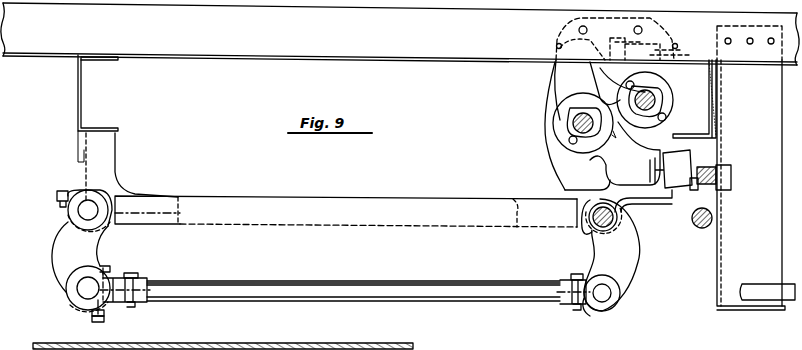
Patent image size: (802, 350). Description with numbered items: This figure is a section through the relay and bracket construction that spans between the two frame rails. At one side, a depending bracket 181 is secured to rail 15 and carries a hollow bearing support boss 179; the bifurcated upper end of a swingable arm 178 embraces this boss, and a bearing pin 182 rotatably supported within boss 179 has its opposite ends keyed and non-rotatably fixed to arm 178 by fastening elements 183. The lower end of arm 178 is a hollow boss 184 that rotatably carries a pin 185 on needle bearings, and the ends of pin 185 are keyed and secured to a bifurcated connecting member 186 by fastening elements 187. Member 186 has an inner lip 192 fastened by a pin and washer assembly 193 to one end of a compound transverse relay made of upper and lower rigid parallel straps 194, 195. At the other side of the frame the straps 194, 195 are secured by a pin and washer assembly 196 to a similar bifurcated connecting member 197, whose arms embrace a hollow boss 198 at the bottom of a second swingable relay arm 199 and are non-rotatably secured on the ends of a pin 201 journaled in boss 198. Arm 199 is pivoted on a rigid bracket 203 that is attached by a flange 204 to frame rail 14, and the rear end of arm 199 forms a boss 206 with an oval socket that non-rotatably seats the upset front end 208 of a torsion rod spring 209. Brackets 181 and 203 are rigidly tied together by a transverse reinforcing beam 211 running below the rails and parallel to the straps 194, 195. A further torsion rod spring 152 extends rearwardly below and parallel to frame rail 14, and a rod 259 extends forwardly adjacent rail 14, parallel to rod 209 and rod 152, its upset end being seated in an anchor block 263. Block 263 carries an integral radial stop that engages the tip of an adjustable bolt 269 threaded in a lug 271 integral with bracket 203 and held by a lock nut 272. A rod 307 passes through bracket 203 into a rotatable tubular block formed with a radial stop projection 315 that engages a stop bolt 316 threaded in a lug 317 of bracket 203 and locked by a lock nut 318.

The frame rail 14 is at (712, 119).
The rail 15 is at (83, 88).
The torsion rod spring 152 is at (702, 229).
The arm 178 is at (55, 262).
The hollow bearing support boss 179 is at (100, 230).
The depending bracket 181 is at (116, 146).
The bearing pin 182 is at (76, 210).
The fastening elements 183 is at (62, 191).
The hollow boss 184 is at (78, 309).
The pin 185 is at (76, 290).
The bifurcated connecting member 186 is at (114, 277).
The fastening elements 187 is at (100, 318).
The inner lip 192 is at (138, 284).
The pin and washer assembly 193 is at (131, 273).
The upper strap 194 is at (237, 282).
The lower strap 195 is at (262, 296).
The pin and washer assembly 196 is at (574, 278).
The bifurcated connecting member 197 is at (580, 306).
The hollow boss 198 is at (606, 312).
The second swingable relay arm 199 is at (640, 262).
The pin 201 is at (606, 296).
The rigid bracket 203 is at (640, 196).
The flange 204 is at (721, 150).
The boss 206 is at (614, 219).
The upset front end 208 is at (623, 163).
The torsion rod spring 209 is at (596, 224).
The transverse reinforcing beam 211 is at (383, 197).
The rod 259 is at (598, 88).
The anchor block 263 is at (670, 92).
The adjustable bolt 269 is at (733, 178).
The lug 271 is at (678, 164).
The lock nut 272 is at (693, 192).
The rod 307 is at (573, 124).
The radial stop projection 315 is at (553, 80).
The stop bolt 316 is at (672, 26).
The lug 317 is at (572, 22).
The lock nut 318 is at (680, 46).